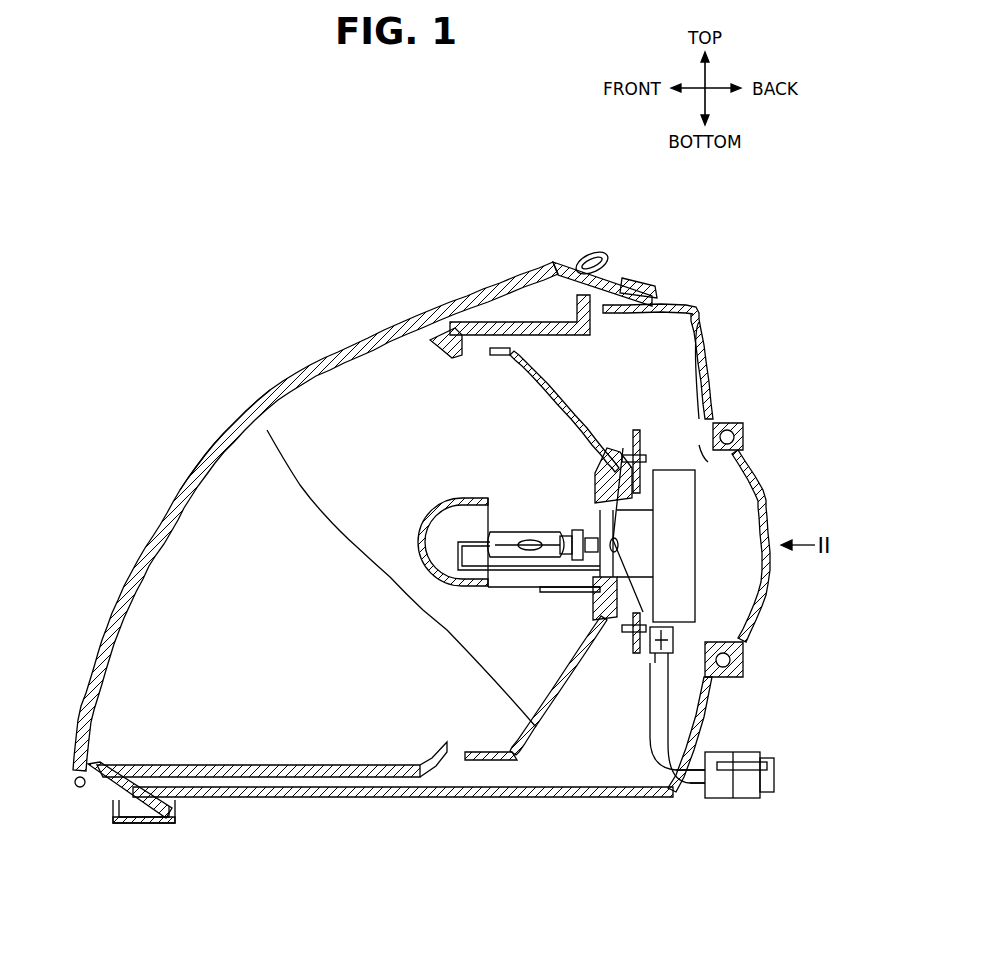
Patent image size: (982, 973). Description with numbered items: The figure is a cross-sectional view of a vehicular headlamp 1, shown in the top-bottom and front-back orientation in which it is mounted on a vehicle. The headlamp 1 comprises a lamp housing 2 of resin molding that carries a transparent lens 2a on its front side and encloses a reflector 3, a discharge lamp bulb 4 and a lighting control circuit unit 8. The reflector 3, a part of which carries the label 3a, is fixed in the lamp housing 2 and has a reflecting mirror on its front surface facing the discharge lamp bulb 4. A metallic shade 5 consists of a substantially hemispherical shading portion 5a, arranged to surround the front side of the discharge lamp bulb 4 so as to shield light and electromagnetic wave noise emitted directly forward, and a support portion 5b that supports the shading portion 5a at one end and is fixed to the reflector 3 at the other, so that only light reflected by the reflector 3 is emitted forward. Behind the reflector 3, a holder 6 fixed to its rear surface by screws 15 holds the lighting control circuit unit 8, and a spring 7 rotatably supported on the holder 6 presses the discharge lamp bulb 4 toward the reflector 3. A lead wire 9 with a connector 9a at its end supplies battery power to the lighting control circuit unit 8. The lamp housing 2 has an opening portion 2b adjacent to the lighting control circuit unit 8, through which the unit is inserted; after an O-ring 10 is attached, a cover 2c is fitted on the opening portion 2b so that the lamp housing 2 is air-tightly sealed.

The headlamp 1 is at (127, 232).
The lamp housing 2 is at (206, 446).
The transparent lens 2a is at (230, 444).
The opening portion 2b is at (684, 304).
The cover 2c is at (754, 456).
The reflector 3 is at (490, 757).
The reflecting surface 3a is at (267, 430).
The discharge lamp bulb 4 is at (525, 532).
The shade 5 is at (420, 570).
The shading portion 5a is at (418, 526).
The support portion 5b is at (540, 590).
The holder 6 is at (637, 430).
The spring 7 is at (523, 530).
The lighting control circuit unit 8 is at (668, 464).
The lead wire 9 is at (650, 708).
The connector 9a is at (716, 774).
The O-ring 10 is at (776, 750).
The screws 15 is at (650, 445).